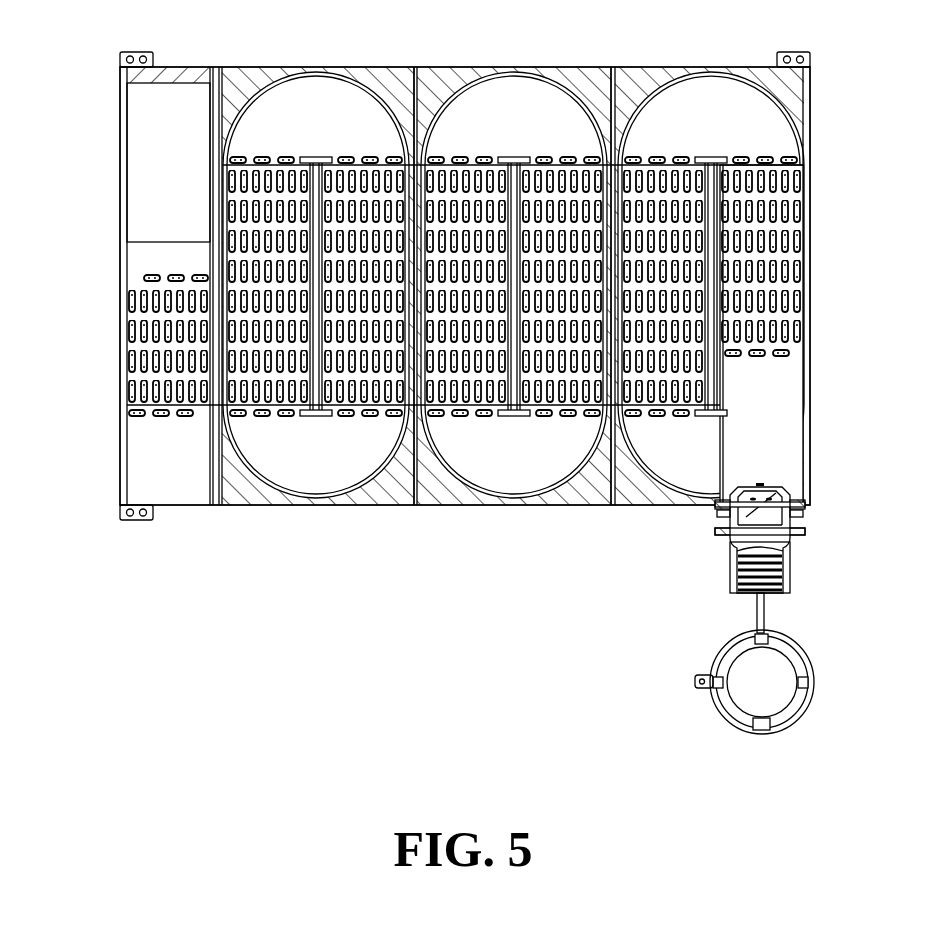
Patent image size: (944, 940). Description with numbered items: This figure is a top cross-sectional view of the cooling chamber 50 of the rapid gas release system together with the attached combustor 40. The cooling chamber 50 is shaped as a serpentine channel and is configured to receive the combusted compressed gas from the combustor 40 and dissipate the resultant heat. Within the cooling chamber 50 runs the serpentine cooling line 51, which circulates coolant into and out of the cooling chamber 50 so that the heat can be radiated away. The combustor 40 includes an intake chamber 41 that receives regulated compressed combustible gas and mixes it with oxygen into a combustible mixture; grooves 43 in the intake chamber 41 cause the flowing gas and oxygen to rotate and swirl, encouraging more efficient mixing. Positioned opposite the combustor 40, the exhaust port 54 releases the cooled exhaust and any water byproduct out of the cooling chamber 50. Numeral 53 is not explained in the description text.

The cooling chamber 50 is at (370, 120).
The serpentine cooling line 51 is at (135, 325).
The filter housing 53 is at (223, 458).
The exhaust port 54 is at (168, 162).
The combustor 40 is at (730, 575).
The intake chamber 41 is at (782, 548).
The grooves 43 is at (740, 548).